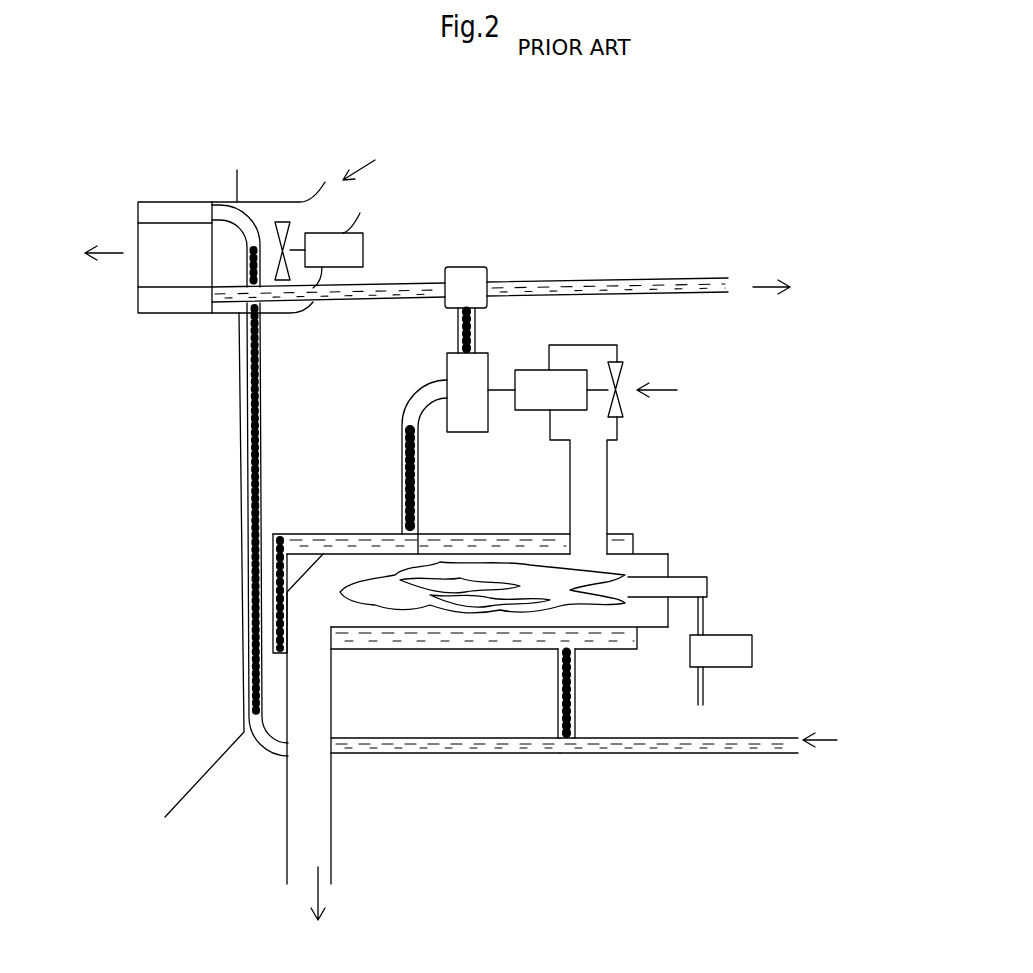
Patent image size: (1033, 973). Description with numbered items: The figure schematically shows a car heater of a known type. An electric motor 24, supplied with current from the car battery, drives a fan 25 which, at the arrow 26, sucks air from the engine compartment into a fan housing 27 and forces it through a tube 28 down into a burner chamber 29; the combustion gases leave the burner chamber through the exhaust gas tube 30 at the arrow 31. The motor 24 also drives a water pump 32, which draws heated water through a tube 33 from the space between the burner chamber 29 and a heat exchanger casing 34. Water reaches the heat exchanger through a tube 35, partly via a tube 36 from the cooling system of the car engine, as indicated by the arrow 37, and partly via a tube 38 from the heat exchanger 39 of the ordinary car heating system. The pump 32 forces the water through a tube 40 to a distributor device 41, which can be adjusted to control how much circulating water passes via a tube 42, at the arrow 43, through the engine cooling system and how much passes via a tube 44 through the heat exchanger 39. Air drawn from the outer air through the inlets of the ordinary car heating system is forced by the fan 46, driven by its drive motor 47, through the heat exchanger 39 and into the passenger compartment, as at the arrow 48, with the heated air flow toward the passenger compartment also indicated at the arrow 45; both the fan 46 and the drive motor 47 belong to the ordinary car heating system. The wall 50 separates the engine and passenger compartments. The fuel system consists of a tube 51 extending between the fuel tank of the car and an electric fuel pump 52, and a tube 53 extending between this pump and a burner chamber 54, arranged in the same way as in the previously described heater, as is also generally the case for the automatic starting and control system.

The electric motor 24 is at (523, 410).
The fan 25 is at (623, 375).
The arrow 26 is at (673, 388).
The fan housing 27 is at (620, 350).
The tube 28 is at (607, 472).
The burner chamber 29 is at (507, 550).
The exhaust gas tube 30 is at (287, 832).
The arrow 31 is at (318, 890).
The water pump 32 is at (447, 370).
The tube 33 is at (402, 466).
The heat exchanger casing 34 is at (462, 532).
The tube 35 is at (575, 698).
The tube 36 is at (693, 750).
The arrow 37 is at (818, 745).
The tube 38 is at (263, 465).
The heat exchanger 39 is at (182, 207).
The tube 40 is at (457, 330).
The distributor device 41 is at (460, 267).
The tube 42 is at (600, 278).
The arrow 43 is at (762, 283).
The tube 44 is at (330, 297).
The arrow 45 is at (355, 170).
The fan 46 is at (280, 222).
The drive motor 47 is at (322, 237).
The arrow 48 is at (110, 253).
The wall 50 is at (242, 412).
The tube 51 is at (703, 683).
The electric fuel pump 52 is at (733, 635).
The tube 53 is at (705, 605).
The burner chamber 54 is at (707, 577).